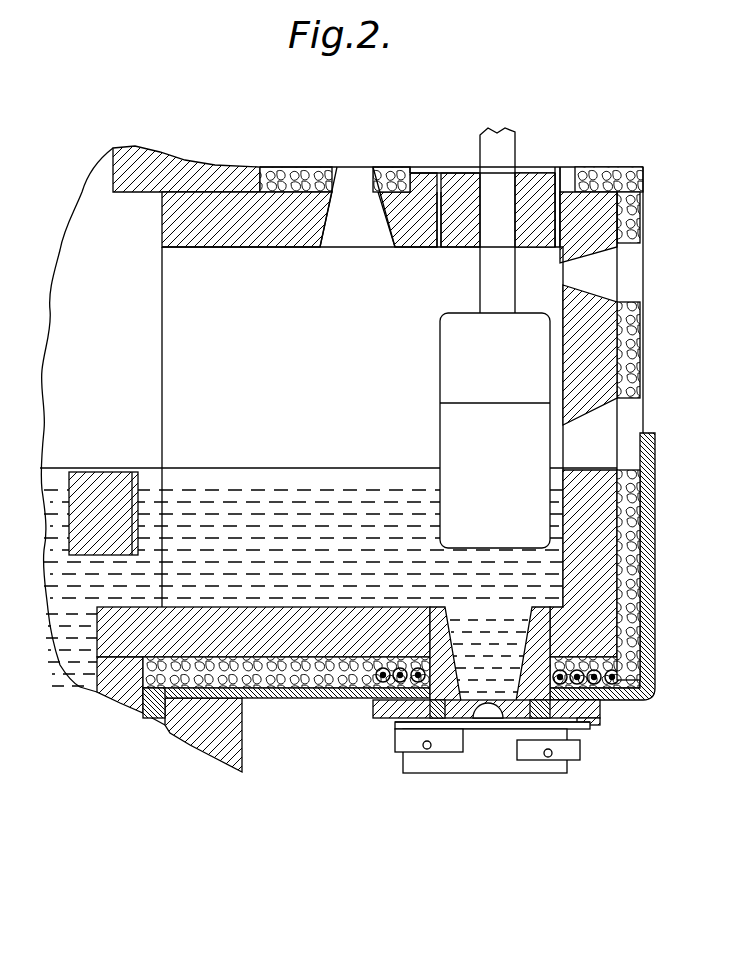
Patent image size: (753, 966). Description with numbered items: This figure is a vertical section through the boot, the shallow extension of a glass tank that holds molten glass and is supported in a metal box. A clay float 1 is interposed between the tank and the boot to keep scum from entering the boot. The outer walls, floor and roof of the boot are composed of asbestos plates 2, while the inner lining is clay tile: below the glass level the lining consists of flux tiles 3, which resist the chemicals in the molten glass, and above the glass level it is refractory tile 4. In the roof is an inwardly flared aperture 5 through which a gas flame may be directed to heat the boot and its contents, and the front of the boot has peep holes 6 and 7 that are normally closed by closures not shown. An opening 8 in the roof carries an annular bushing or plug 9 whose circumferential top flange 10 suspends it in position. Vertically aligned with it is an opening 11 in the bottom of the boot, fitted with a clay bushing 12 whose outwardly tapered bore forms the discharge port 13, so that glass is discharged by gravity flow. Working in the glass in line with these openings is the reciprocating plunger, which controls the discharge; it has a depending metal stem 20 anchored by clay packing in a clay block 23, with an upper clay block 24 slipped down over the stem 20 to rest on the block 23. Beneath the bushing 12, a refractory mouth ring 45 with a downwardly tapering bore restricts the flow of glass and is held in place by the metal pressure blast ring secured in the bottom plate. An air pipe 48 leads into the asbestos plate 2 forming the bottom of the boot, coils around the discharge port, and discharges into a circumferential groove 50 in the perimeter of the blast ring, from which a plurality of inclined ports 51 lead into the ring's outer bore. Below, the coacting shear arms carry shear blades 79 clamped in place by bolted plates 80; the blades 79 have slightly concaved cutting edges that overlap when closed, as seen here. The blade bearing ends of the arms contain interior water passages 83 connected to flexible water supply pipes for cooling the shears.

The clay float 1 is at (106, 472).
The asbestos plates 2 is at (640, 188).
The flux tiles 3 is at (318, 665).
The refractory tile 4 is at (328, 422).
The inwardly flared aperture 5 is at (357, 207).
The peep hole 6 is at (601, 344).
The peep hole 7 is at (583, 548).
The roof opening 8 is at (437, 250).
The annular bushing or plug 9 is at (532, 180).
The circumferential top flange 10 is at (557, 180).
The bottom opening 11 is at (447, 618).
The clay bushing 12 is at (450, 631).
The discharge port 13 is at (482, 659).
The depending metal stem 20 is at (497, 220).
The clay block 23 is at (495, 425).
The upper clay block 24 is at (495, 430).
The mouth ring 45 is at (515, 728).
The air pipe 48 is at (628, 702).
The circumferential groove 50 is at (423, 726).
The inclined ports 51 is at (430, 731).
The shear blades 79 is at (484, 765).
The clamping plates 80 is at (402, 760).
The interior water passages 83 is at (548, 758).